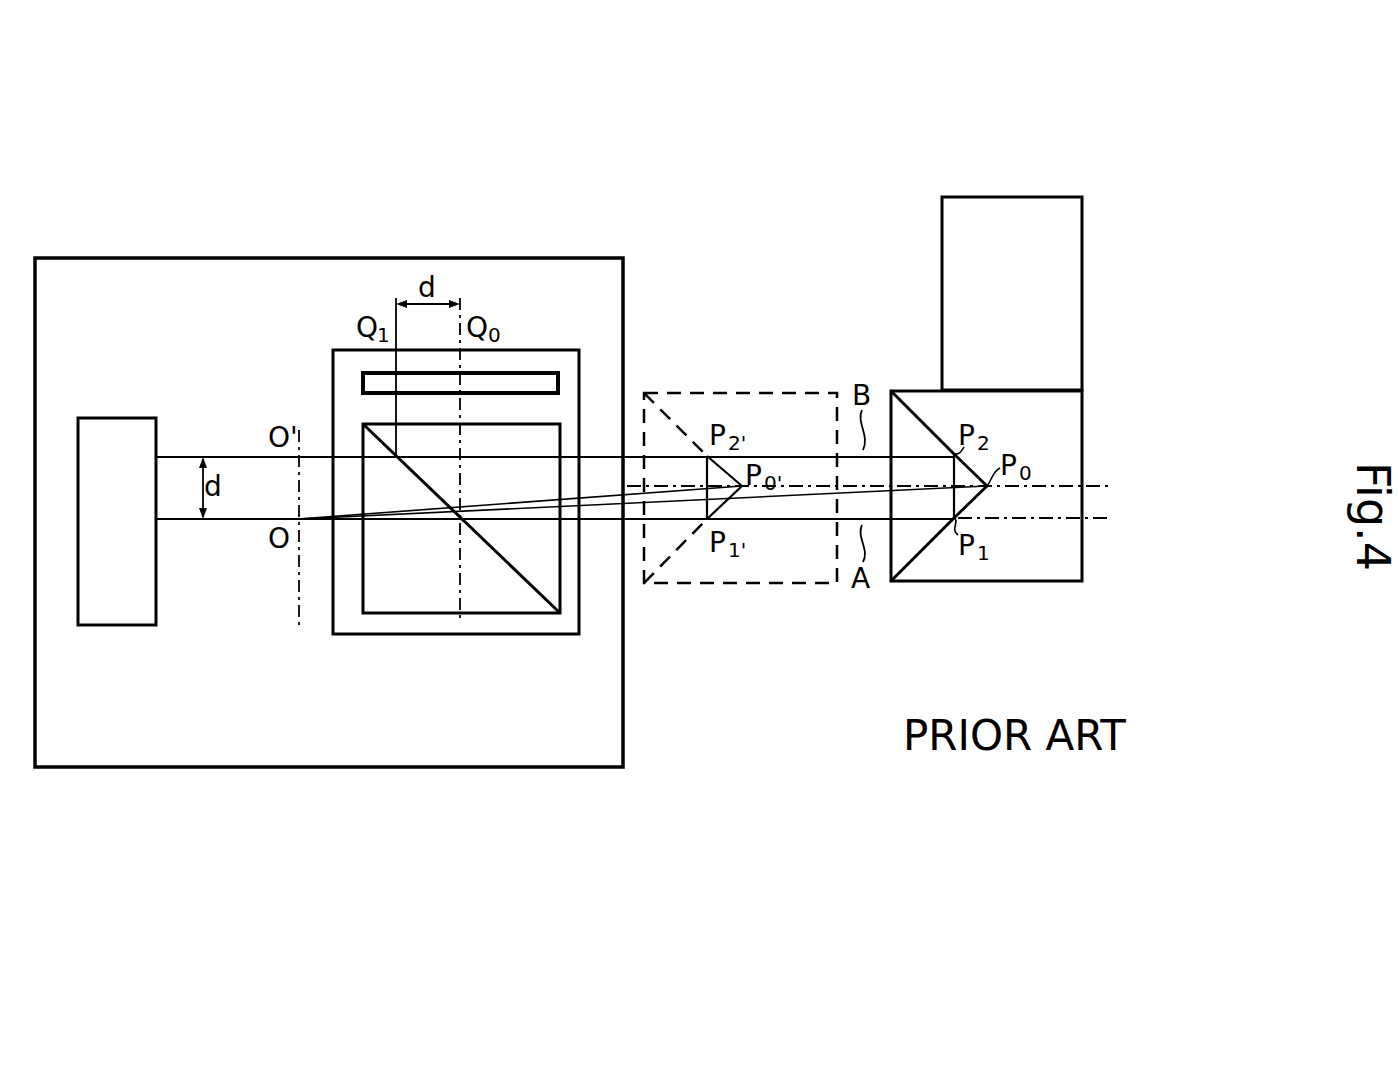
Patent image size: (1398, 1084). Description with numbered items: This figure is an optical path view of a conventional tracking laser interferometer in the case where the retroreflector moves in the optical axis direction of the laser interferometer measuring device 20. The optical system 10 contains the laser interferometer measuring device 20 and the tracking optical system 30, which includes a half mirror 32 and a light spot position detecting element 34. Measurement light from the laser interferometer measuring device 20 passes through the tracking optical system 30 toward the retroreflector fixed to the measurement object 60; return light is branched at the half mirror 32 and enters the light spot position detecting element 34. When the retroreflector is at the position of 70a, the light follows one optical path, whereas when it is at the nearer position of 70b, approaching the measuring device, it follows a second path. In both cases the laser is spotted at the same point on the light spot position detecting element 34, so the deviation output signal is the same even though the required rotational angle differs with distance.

The optical system 10 is at (290, 258).
The laser interferometer measuring device 20 is at (125, 418).
The tracking optical system 30 is at (355, 634).
The half mirror 32 is at (535, 615).
The light spot position detecting element 34 is at (541, 378).
The measurement object 60 is at (1083, 305).
The retroreflector 70a is at (1083, 566).
The retroreflector 70b is at (780, 585).